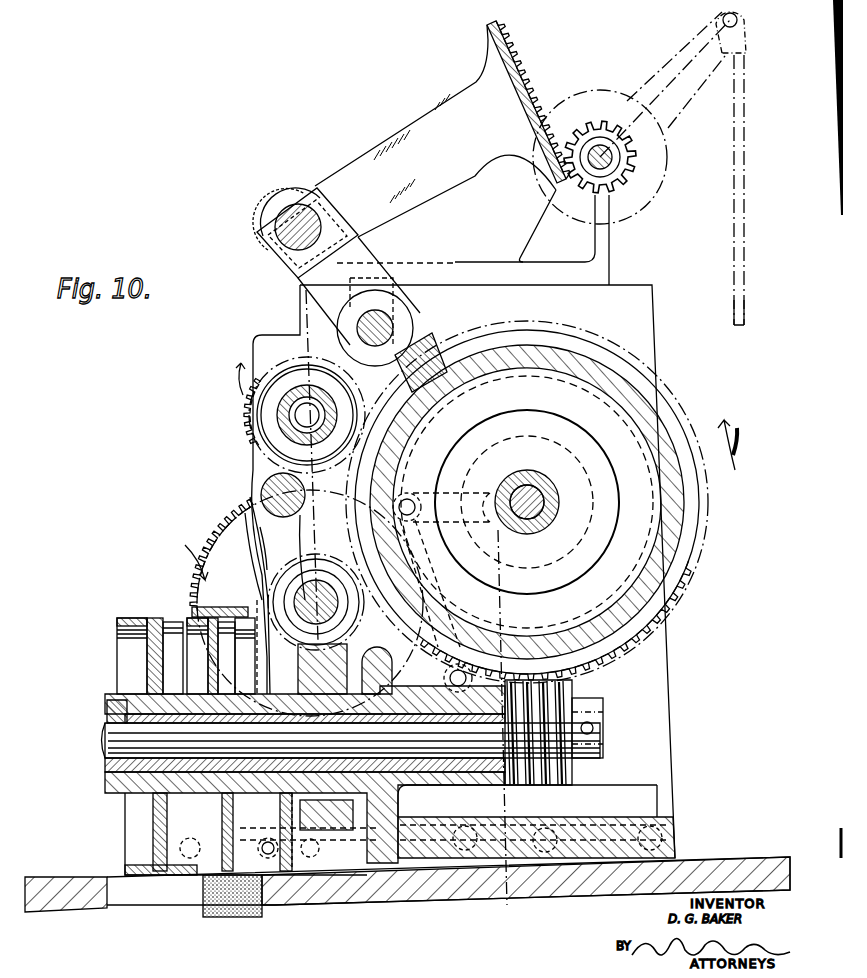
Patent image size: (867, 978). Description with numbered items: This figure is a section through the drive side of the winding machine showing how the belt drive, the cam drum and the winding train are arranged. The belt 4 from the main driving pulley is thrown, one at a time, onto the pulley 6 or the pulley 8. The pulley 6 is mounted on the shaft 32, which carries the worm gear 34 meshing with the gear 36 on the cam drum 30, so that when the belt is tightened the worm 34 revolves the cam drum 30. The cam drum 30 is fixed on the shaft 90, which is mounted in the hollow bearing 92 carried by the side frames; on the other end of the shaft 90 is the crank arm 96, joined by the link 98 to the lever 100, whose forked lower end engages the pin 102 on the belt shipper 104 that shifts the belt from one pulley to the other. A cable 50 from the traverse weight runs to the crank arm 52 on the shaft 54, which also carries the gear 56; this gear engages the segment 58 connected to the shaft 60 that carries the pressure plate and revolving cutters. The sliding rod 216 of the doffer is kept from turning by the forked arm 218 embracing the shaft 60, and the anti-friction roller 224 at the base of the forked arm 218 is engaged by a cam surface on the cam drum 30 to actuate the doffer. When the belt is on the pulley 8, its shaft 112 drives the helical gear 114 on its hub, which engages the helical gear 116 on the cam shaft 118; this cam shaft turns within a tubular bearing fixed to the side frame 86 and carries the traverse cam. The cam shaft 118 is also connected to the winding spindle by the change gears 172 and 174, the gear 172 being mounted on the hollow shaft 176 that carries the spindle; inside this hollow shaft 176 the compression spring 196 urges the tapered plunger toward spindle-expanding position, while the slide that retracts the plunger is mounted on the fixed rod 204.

The belt 4 is at (236, 915).
The pulley 6 is at (150, 617).
The pulley 8 is at (228, 615).
The cam drum 30 is at (672, 602).
The shaft 32 is at (104, 745).
The worm gear 34 is at (574, 782).
The gear 36 is at (568, 322).
The cable 50 is at (735, 210).
The crank arm 52 is at (685, 102).
The shaft 54 is at (598, 146).
The gear 56 is at (640, 162).
The segment 58 is at (528, 75).
The shaft 60 is at (300, 210).
The side frame 86 is at (656, 318).
The shaft 90 is at (545, 510).
The hollow bearing 92 is at (555, 492).
The crank arm 96 is at (500, 488).
The link 98 is at (440, 492).
The lever 100 is at (455, 598).
The pin 102 is at (506, 870).
The belt shipper 104 is at (672, 836).
The shaft 112 is at (292, 878).
The helical gear 114 is at (300, 658).
The helical gear 116 is at (268, 545).
The cam shaft 118 is at (320, 590).
The gear 172 is at (250, 430).
The gear 174 is at (205, 550).
The hollow shaft 176 is at (295, 420).
The compression spring 196 is at (305, 410).
The fixed rod 204 is at (280, 492).
The sliding rod 216 is at (395, 318).
The forked arm 218 is at (278, 252).
The anti-friction roller 224 is at (428, 348).